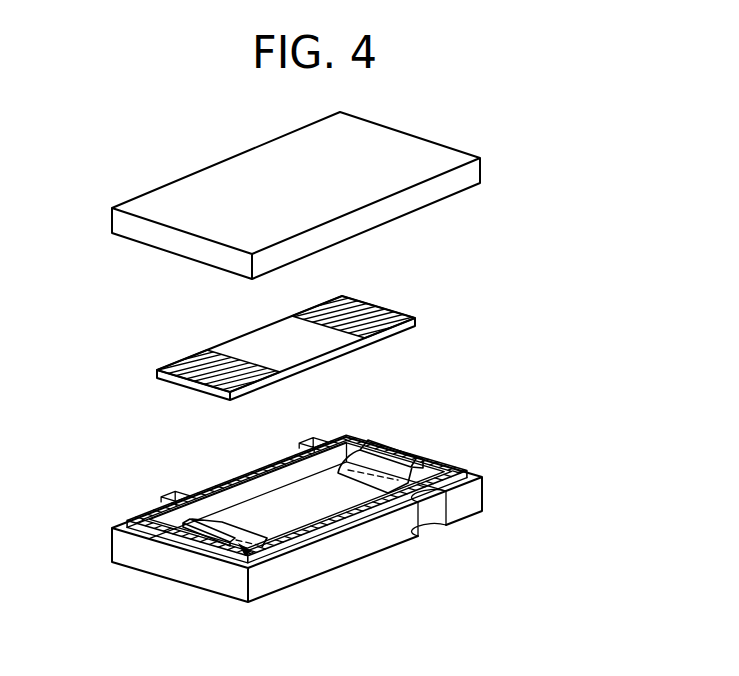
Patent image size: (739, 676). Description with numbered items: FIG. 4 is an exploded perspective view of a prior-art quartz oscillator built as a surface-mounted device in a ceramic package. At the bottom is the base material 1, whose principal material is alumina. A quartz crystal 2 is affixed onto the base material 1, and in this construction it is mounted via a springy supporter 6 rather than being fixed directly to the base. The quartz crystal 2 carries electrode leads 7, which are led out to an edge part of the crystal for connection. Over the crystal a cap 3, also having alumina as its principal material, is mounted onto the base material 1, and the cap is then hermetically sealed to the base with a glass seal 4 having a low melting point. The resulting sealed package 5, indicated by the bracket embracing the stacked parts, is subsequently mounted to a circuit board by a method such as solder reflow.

The base material 1 is at (473, 492).
The quartz crystal 2 is at (415, 316).
The cap 3 is at (437, 140).
The glass seal 4 is at (455, 462).
The sealed package 5 is at (80, 485).
The springy supporter 6 is at (395, 441).
The electrode leads 7 is at (368, 300).